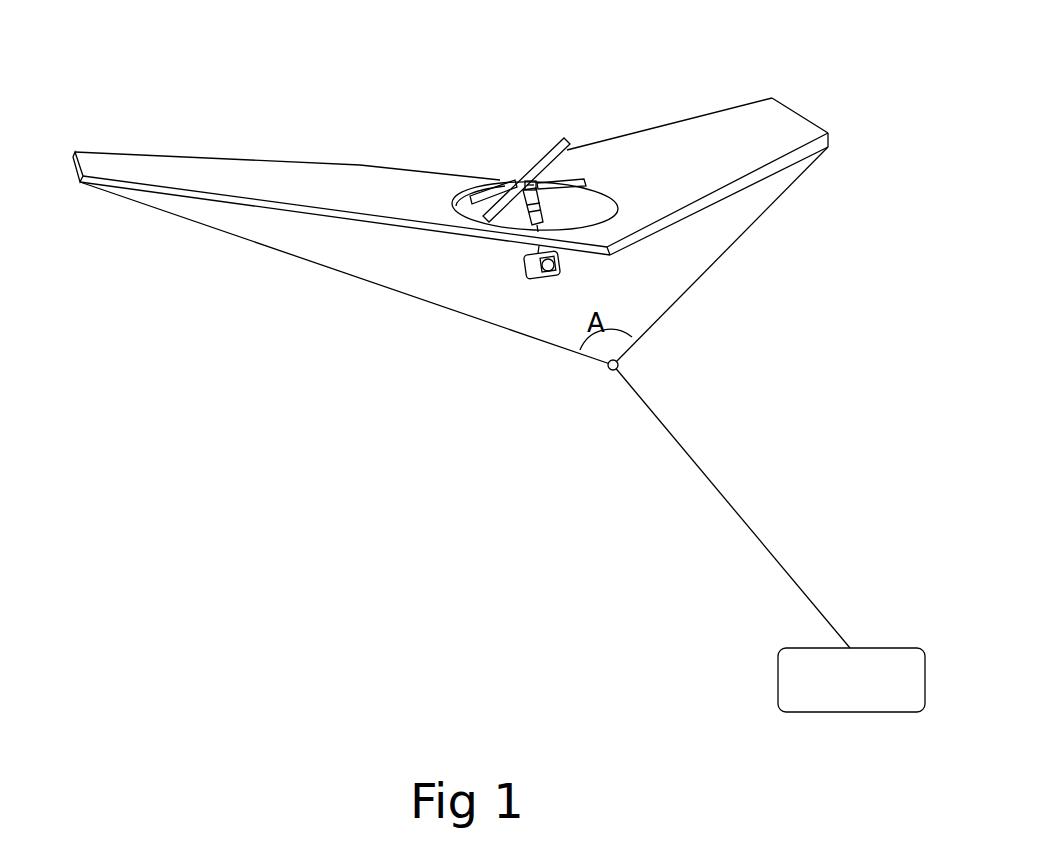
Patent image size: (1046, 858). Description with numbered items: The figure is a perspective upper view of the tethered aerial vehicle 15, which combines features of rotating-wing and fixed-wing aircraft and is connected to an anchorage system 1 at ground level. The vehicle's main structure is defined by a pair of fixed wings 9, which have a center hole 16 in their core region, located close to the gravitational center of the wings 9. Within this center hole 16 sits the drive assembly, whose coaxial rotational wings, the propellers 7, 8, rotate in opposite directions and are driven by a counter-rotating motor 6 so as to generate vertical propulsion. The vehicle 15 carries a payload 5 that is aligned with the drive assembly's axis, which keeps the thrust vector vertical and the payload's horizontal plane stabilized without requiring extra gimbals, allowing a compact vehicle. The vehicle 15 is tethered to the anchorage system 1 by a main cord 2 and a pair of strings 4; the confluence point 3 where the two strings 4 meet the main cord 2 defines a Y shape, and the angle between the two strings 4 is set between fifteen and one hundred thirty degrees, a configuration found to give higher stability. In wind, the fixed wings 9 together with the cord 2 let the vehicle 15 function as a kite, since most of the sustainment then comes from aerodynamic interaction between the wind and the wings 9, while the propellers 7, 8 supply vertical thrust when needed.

The anchorage system 1 is at (777, 680).
The main cord 2 is at (715, 498).
The confluence point 3 is at (605, 368).
The strings 4 is at (357, 288).
The payload 5 is at (564, 279).
The counter-rotating motor 6 is at (522, 214).
The propeller 7 is at (565, 178).
The propeller 8 is at (508, 182).
The fixed wings 9 is at (123, 163).
The tethered aerial vehicle 15 is at (450, 203).
The center hole 16 is at (590, 183).